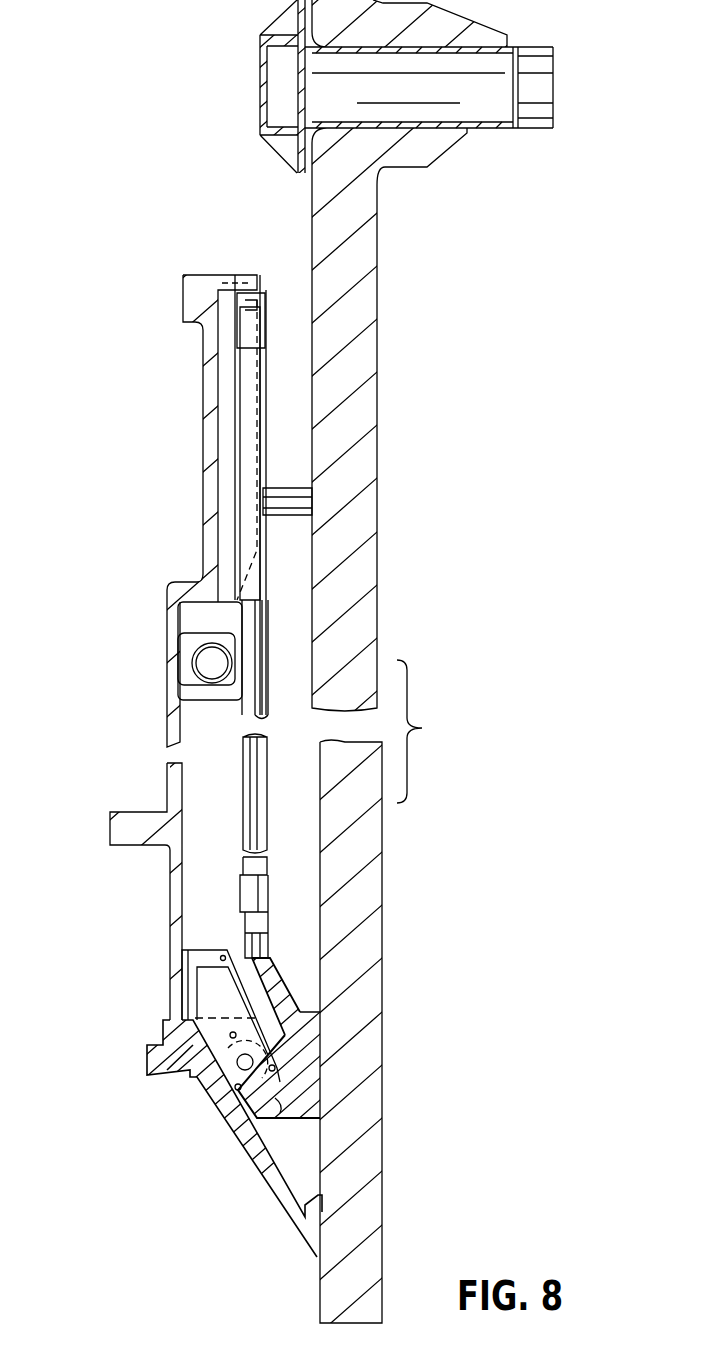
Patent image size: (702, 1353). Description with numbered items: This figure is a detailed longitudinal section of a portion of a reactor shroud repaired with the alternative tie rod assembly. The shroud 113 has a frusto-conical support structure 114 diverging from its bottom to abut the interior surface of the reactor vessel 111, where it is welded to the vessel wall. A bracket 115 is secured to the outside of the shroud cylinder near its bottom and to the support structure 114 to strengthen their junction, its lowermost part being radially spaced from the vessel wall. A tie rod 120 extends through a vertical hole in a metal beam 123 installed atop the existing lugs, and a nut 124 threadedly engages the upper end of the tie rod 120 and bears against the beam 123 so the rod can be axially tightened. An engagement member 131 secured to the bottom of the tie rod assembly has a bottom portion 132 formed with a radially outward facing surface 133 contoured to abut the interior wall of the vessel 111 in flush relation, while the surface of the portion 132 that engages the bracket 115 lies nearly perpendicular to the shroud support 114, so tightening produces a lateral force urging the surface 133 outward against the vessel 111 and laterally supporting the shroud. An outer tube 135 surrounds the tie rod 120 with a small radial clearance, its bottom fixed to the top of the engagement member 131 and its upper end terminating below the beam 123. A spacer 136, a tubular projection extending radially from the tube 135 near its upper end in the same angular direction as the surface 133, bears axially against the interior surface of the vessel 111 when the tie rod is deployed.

The reactor vessel 111 is at (357, 353).
The shroud 113 is at (172, 905).
The frusto-conical support structure 114 is at (280, 1190).
The bracket 115 is at (200, 963).
The tie rod 120 is at (240, 360).
The metal beam 123 is at (260, 295).
The nut 124 is at (248, 356).
The engagement member 131 is at (326, 1005).
The bottom portion 132 is at (265, 1128).
The radially outward facing surface 133 is at (322, 1085).
The outer tube 135 is at (267, 818).
The spacer 136 is at (300, 482).